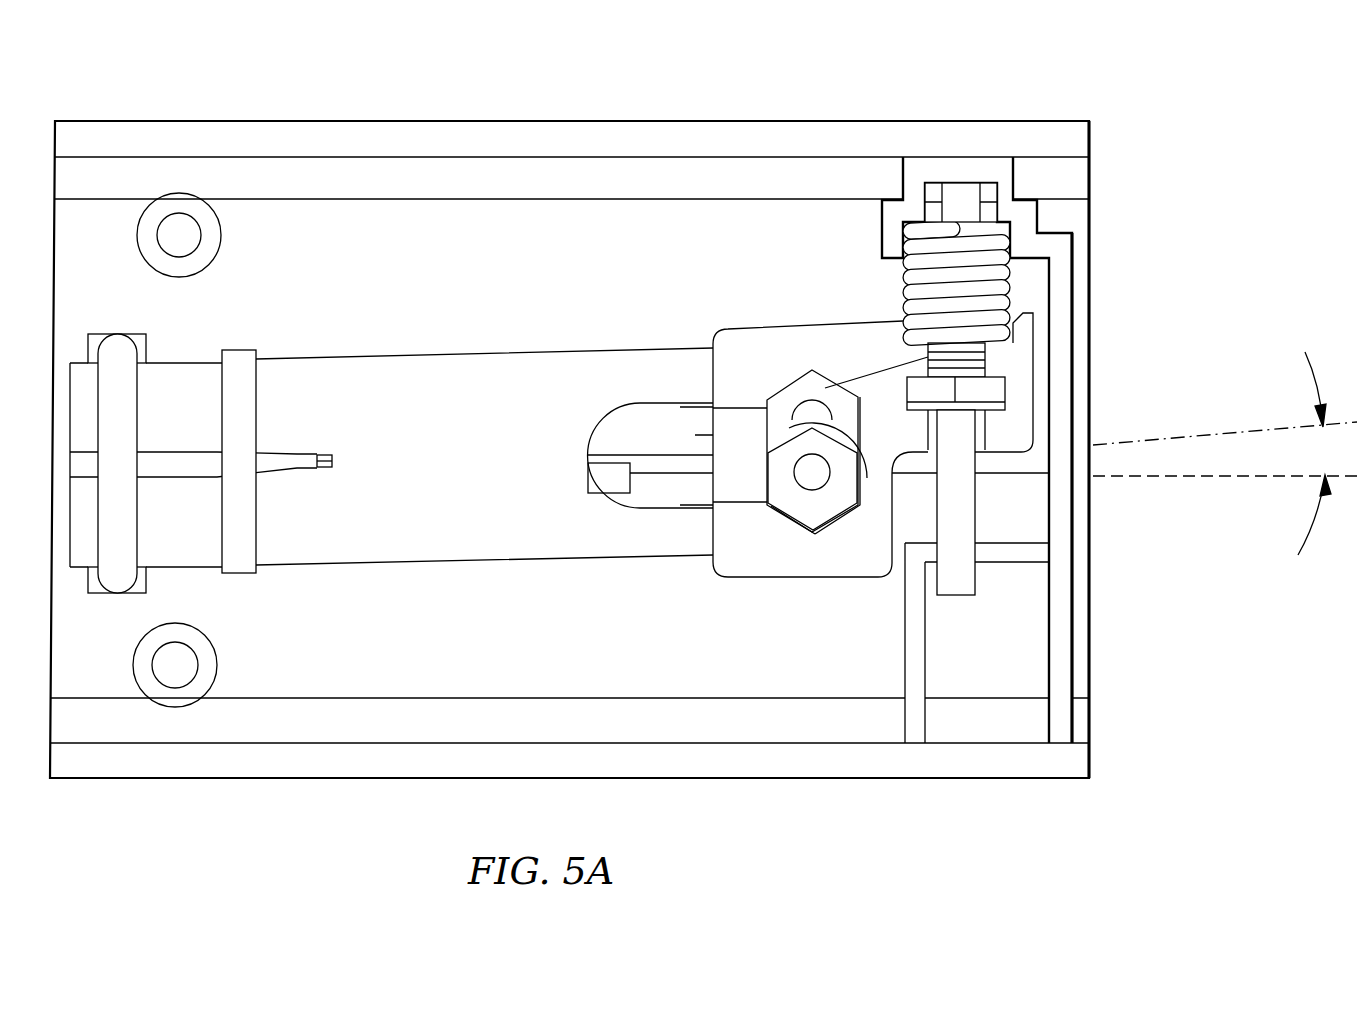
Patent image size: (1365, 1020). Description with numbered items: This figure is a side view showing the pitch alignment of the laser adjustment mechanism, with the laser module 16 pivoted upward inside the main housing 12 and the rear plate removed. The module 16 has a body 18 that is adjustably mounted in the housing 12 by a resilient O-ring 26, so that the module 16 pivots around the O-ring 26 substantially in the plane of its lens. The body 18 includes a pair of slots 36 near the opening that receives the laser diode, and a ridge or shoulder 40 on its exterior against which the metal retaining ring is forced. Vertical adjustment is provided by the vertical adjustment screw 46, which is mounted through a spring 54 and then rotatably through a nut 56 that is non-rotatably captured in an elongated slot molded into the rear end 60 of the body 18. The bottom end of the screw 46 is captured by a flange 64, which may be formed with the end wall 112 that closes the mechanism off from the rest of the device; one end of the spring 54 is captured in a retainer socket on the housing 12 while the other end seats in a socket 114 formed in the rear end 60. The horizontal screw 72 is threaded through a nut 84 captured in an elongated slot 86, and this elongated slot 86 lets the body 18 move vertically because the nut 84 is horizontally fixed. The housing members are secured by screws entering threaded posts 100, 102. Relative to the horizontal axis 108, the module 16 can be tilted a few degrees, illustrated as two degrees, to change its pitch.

The main housing 12 is at (517, 650).
The laser module 16 is at (455, 380).
The module body 18 is at (468, 465).
The O-ring 26 is at (132, 405).
The slots 36 is at (178, 473).
The shoulder 40 is at (237, 352).
The vertical adjustment screw 46 is at (968, 523).
The spring 54 is at (1010, 275).
The nut 56 is at (1000, 390).
The rear end 60 is at (803, 337).
The flange 64 is at (915, 658).
The horizontal adjustment screw 72 is at (800, 480).
The nut 84 is at (805, 516).
The elongated slot 86 is at (810, 390).
The threaded post 100 is at (963, 180).
The threaded post 102 is at (220, 243).
The horizontal axis 108 is at (1218, 478).
The end wall 112 is at (1054, 640).
The socket 114 is at (903, 318).